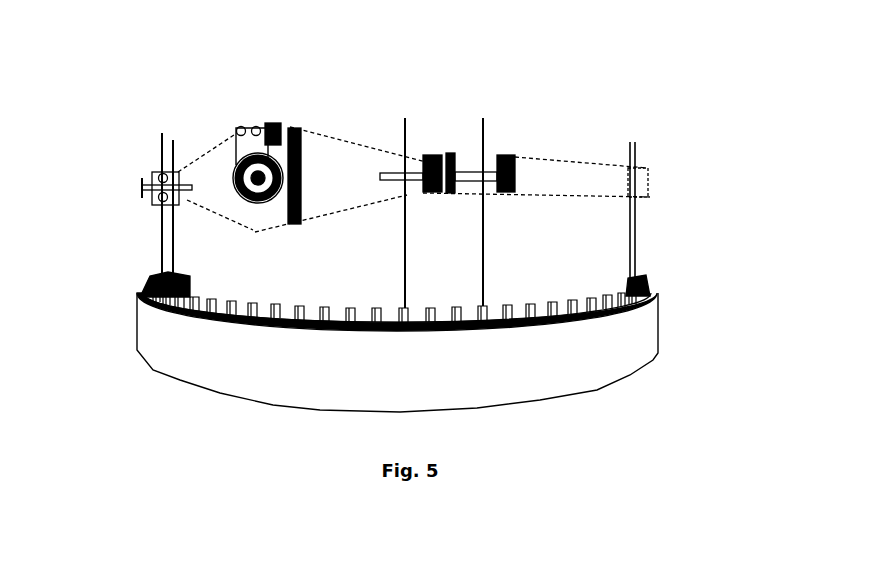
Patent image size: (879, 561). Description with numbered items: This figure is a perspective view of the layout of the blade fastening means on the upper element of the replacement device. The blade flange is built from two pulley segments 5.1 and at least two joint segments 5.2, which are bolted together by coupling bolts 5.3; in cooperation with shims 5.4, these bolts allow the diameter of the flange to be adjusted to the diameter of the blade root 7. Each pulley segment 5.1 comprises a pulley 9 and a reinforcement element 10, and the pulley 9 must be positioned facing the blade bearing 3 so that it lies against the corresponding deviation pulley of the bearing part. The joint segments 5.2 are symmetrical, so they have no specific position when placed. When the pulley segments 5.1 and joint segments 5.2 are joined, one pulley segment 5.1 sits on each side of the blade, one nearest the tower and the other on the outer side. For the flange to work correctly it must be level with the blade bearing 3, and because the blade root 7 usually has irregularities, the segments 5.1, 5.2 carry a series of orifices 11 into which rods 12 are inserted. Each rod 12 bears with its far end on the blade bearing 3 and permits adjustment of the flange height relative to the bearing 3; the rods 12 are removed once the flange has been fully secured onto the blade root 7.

The blade bearing 3 is at (153, 347).
The pulley segment 5.1 is at (215, 208).
The joint segment 5.2 is at (588, 183).
The bolt 5.3 is at (428, 162).
The shim 5.4 is at (451, 157).
The blade root 7 is at (597, 127).
The pulley 9 is at (252, 160).
The reinforcement element 10 is at (294, 128).
The orifice 11 is at (490, 162).
The rod 12 is at (483, 267).